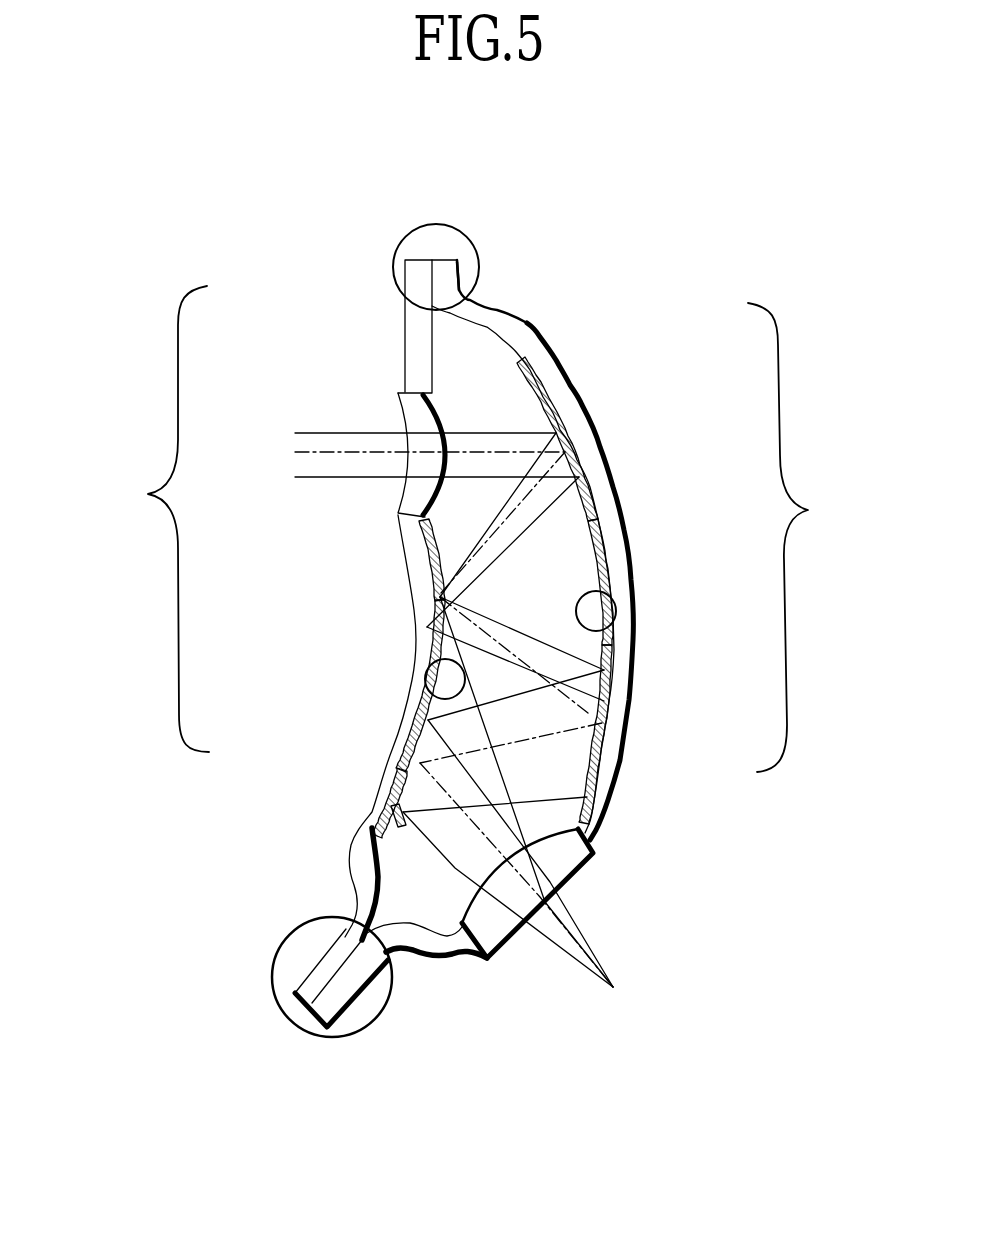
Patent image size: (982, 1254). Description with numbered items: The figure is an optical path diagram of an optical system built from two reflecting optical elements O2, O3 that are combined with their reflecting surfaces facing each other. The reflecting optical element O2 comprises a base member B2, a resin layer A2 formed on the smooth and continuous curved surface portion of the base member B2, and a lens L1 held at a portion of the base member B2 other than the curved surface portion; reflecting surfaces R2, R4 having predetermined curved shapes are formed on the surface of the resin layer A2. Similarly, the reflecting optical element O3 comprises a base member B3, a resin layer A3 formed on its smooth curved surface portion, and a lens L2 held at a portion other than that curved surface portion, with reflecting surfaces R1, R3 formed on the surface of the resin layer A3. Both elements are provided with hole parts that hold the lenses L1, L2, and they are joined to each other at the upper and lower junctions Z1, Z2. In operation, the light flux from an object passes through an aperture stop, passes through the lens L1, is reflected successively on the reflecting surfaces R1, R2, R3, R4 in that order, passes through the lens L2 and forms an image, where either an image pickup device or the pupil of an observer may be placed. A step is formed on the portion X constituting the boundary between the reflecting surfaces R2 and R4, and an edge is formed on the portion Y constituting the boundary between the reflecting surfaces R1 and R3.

The reflecting optical element O2 is at (147, 519).
The reflecting optical element O3 is at (803, 537).
The upper junction Z1 is at (404, 241).
The lower junction Z2 is at (278, 946).
The base member B2 is at (413, 352).
The base member B3 is at (548, 358).
The lens L1 is at (400, 418).
The lens L2 is at (583, 852).
The reflecting surface R1 is at (553, 417).
The reflecting surface R2 is at (438, 556).
The reflecting surface R3 is at (598, 716).
The reflecting surface R4 is at (388, 812).
The resin layer A2 is at (425, 625).
The resin layer A3 is at (613, 578).
The portion X is at (420, 673).
The portion Y is at (620, 604).